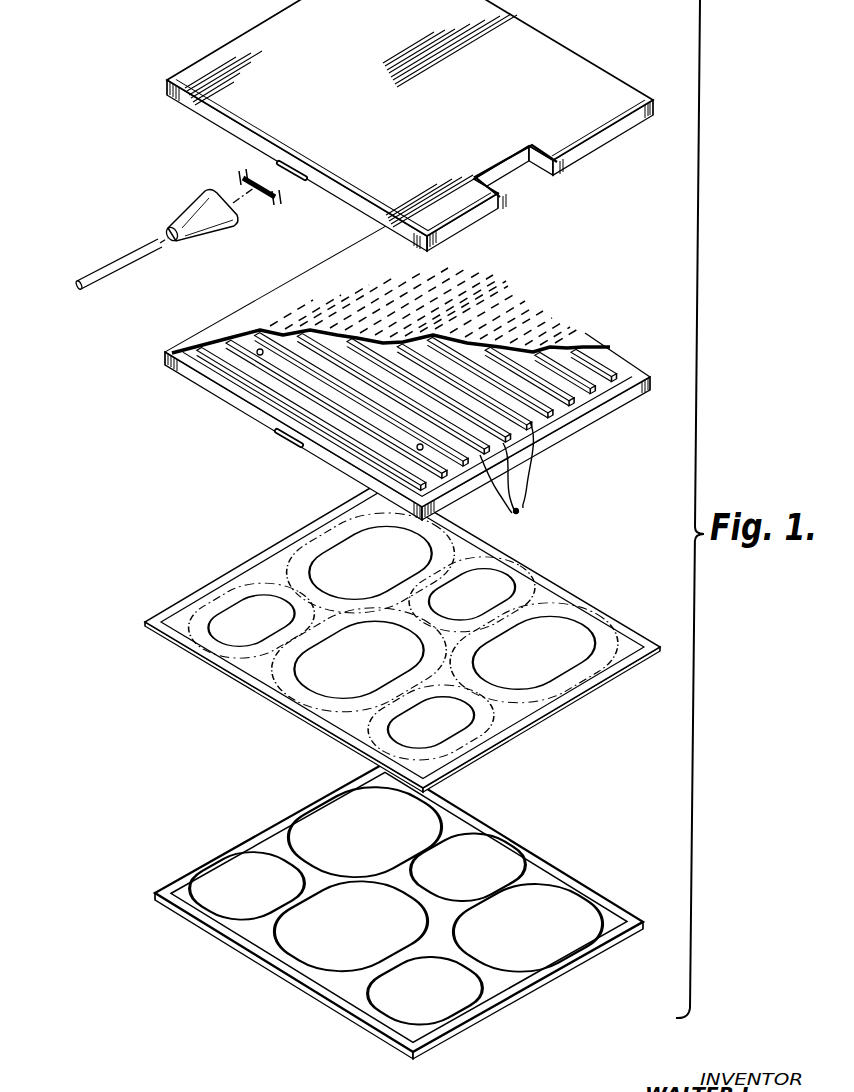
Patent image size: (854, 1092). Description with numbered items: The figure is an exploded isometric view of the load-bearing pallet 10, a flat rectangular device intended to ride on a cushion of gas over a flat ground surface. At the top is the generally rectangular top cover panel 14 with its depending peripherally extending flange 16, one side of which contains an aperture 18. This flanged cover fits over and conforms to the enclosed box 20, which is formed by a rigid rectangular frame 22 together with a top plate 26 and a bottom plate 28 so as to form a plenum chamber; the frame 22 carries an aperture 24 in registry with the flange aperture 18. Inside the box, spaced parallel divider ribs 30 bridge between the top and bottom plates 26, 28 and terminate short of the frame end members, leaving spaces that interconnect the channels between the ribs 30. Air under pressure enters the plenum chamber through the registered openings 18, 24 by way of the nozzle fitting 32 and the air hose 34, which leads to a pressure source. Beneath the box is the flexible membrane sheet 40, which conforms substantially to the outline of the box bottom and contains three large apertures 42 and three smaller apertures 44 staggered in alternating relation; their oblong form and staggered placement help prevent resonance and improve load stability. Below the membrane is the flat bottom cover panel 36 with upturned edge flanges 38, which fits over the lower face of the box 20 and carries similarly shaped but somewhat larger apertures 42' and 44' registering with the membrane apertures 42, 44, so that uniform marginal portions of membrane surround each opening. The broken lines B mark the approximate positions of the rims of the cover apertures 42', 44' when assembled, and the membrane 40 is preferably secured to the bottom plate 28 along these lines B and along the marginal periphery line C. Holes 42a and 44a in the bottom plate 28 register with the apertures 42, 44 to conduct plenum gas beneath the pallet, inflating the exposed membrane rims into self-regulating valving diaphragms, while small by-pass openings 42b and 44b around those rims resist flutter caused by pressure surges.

The load-bearing pallet 10 is at (127, 552).
The top cover panel 14 is at (370, 79).
The depending peripherally extending flange 16 is at (577, 163).
The aperture 18 is at (295, 175).
The enclosed box 20 is at (568, 320).
The rigid rectangular frame 22 is at (621, 356).
The aperture 24 is at (290, 447).
The top plate 26 is at (505, 300).
The bottom plate 28 is at (560, 408).
The divider ribs 30 is at (518, 474).
The nozzle fitting 32 is at (226, 226).
The air hose 34 is at (118, 278).
The bottom cover panel 36 is at (359, 992).
The upturned edge flanges 38 is at (408, 1048).
The flexible membrane sheet 40 is at (548, 586).
The large apertures 42 is at (408, 634).
The smaller apertures 44 is at (406, 633).
The apertures 42' is at (402, 905).
The apertures 44' is at (399, 902).
The holes 42a is at (276, 434).
The holes 44a is at (258, 355).
The smaller apertures 42b is at (578, 688).
The smaller apertures 44b is at (287, 590).
The broken lines B is at (233, 678).
The marginal periphery line C is at (173, 638).